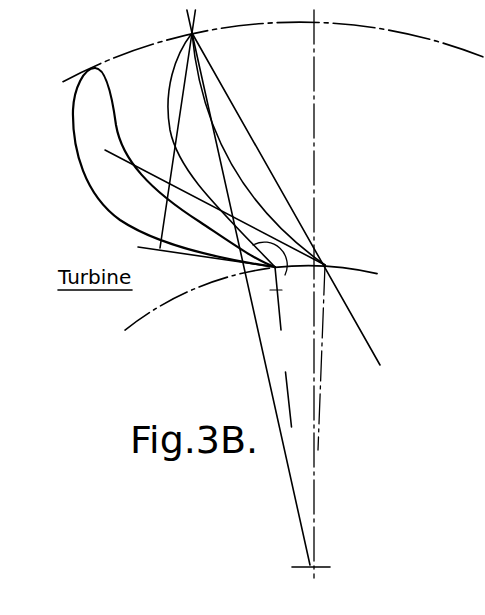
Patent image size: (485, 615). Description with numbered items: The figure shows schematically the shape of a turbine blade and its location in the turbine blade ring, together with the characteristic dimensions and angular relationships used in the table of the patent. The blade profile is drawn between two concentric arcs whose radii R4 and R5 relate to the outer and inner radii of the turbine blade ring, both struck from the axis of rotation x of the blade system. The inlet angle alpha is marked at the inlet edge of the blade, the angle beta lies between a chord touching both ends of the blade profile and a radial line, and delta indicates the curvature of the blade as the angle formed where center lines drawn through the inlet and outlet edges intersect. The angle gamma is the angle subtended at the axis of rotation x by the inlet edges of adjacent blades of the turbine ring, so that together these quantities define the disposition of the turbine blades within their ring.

The blade ring radius R4 is at (463, 50).
The blade ring radius R5 is at (240, 412).
The axis of rotation x is at (312, 568).